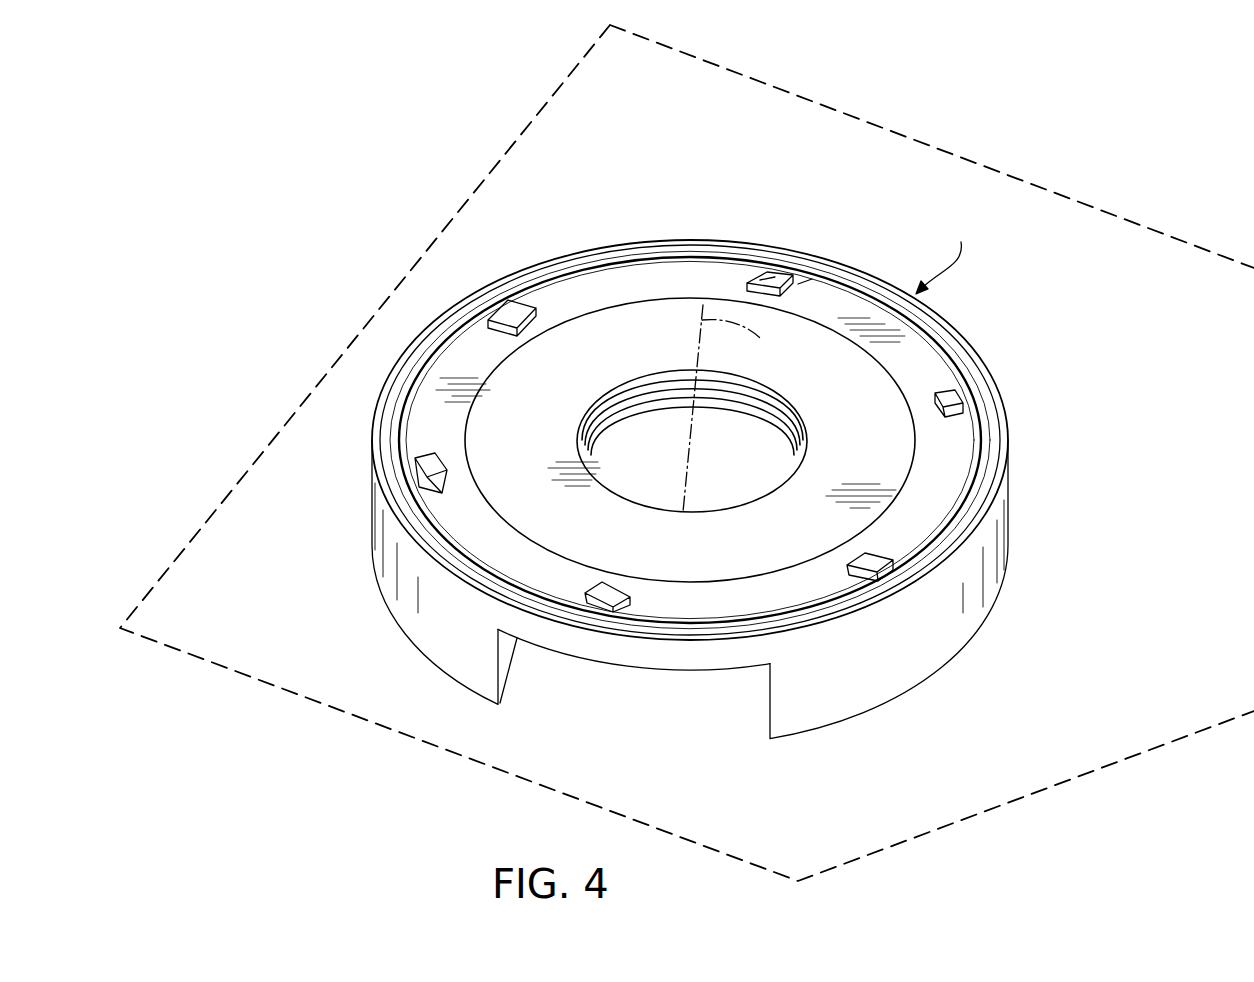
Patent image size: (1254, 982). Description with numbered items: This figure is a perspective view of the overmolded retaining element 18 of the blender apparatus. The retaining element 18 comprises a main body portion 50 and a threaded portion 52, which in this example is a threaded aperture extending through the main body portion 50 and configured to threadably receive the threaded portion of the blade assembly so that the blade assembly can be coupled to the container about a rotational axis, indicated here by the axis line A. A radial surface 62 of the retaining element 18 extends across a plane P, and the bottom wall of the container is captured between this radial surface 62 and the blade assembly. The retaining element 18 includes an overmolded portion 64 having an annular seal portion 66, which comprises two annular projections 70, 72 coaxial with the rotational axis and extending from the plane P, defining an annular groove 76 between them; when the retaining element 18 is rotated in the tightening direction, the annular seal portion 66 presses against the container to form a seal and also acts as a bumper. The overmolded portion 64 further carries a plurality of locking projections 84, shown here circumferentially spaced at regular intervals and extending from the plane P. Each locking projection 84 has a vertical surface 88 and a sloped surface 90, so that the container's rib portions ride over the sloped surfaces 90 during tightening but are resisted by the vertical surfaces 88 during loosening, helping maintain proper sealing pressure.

The retaining element 18 is at (689, 462).
The main body portion 50 is at (1007, 527).
The threaded portion 52 is at (620, 382).
The radial surface 62 is at (831, 436).
The overmolded portion 64 is at (630, 256).
The annular seal portion 66 is at (1000, 472).
The annular projection 70 is at (947, 358).
The annular projection 72 is at (980, 387).
The annular groove 76 is at (946, 252).
The locking projections 84 is at (515, 306).
The vertical surface 88 is at (812, 280).
The sloped surface 90 is at (762, 280).
The central axis A is at (732, 408).
The plane P is at (1105, 212).